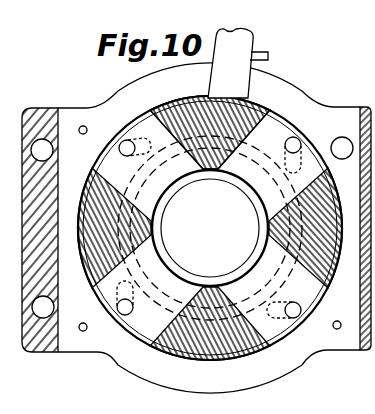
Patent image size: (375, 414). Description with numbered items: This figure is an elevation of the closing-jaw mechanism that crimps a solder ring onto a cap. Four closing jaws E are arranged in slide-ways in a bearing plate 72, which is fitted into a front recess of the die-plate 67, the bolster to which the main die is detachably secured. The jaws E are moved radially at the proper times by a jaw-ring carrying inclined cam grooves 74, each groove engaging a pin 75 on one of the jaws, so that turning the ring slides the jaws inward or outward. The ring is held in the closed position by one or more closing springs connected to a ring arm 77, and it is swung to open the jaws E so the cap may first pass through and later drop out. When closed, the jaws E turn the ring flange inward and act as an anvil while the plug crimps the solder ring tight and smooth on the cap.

The die-plate 67 is at (127, 357).
The bearing plate 72 is at (207, 171).
The cam grooves 74 is at (142, 152).
The pin 75 is at (297, 138).
The ring arm 77 is at (258, 47).
The closing jaws E is at (252, 170).